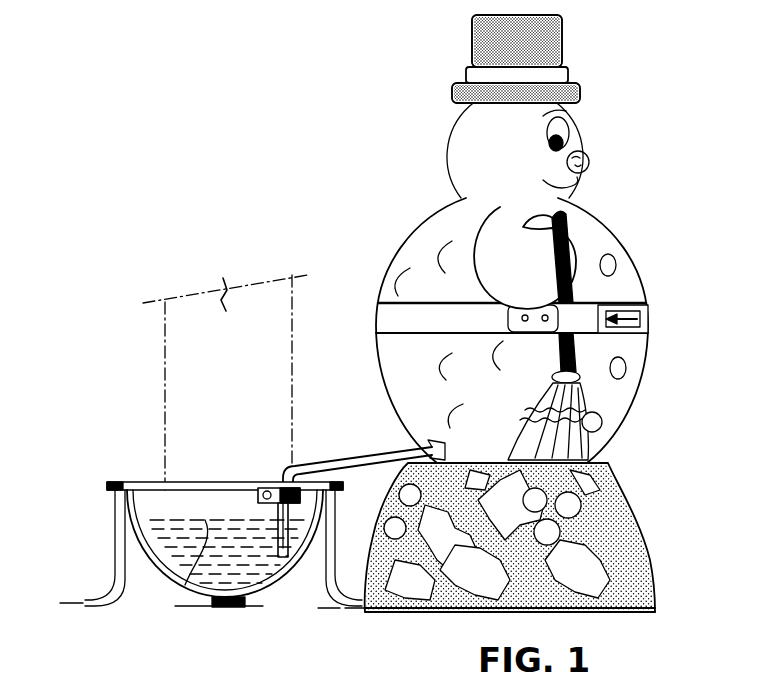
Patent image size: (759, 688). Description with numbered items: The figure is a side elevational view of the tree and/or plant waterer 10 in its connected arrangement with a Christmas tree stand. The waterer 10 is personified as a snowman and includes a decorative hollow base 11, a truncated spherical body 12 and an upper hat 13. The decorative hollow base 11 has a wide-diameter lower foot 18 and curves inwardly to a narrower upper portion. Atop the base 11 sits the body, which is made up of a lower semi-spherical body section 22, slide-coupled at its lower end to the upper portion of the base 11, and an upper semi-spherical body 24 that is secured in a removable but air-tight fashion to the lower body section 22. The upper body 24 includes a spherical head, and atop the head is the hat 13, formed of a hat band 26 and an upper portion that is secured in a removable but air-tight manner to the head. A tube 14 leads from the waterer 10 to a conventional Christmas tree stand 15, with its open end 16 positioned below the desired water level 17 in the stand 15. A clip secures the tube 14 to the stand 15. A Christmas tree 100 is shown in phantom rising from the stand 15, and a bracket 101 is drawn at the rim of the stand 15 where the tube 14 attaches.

The tree and/or plant waterer 10 is at (622, 224).
The decorative hollow base 11 is at (612, 483).
The truncated spherical body 12 is at (395, 258).
The upper hat 13 is at (466, 72).
The tube 14 is at (348, 458).
The Christmas tree stand 15 is at (140, 547).
The open end 16 is at (286, 583).
The desired water level 17 is at (186, 588).
The lower foot 18 is at (645, 612).
The lower semi-spherical body section 22 is at (628, 371).
The upper semi-spherical body 24 is at (641, 287).
The hat band 26 is at (562, 48).
The Christmas tree 100 is at (173, 391).
The bracket 101 is at (262, 487).